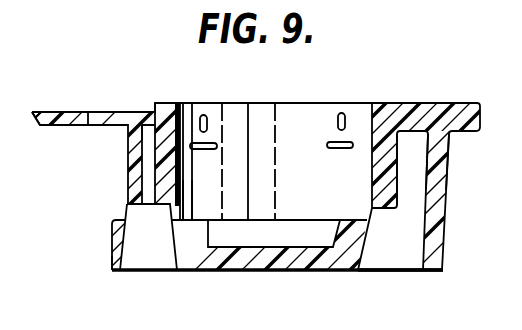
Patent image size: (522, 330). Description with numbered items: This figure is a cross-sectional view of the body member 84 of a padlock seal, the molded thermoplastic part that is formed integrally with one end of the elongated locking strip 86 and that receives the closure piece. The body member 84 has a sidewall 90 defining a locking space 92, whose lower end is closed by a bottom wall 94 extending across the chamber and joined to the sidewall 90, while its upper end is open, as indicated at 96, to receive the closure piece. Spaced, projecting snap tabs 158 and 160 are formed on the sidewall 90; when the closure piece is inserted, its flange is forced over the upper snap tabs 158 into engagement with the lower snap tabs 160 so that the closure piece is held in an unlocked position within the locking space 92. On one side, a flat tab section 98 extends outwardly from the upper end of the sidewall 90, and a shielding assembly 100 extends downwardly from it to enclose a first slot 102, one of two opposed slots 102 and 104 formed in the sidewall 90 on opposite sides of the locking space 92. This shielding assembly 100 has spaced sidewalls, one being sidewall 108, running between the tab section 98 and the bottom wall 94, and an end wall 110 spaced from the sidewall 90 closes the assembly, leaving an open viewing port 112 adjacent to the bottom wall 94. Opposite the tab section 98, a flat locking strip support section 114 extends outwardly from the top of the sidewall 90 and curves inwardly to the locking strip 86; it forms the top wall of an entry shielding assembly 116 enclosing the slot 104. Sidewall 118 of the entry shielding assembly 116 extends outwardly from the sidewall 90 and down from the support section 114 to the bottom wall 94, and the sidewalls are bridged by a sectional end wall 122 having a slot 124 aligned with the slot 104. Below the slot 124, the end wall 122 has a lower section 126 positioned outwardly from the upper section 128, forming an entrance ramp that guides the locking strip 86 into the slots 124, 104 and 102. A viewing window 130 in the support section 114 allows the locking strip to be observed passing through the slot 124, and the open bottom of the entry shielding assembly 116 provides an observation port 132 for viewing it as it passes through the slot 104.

The body member 84 is at (452, 254).
The locking strip 86 is at (38, 127).
The sidewall 90 is at (372, 110).
The locking space 92 is at (265, 113).
The bottom wall 94 is at (218, 258).
The open upper end 96 is at (190, 103).
The flat tab section 98 is at (412, 110).
The shielding assembly 100 is at (449, 178).
The first slot 102 is at (369, 216).
The slot 104 is at (192, 221).
The sidewall of shielding assembly 108 is at (406, 246).
The end wall 110 is at (443, 221).
The viewing port 112 is at (392, 258).
The flat locking strip support section 114 is at (77, 111).
The entry shielding assembly 116 is at (105, 262).
The sidewall of entry shielding assembly 118 is at (165, 236).
The sectional end wall 122 is at (122, 176).
The slot 124 is at (122, 207).
The lower section 126 is at (113, 233).
The upper section 128 is at (128, 135).
The viewing window 130 is at (105, 116).
The observation port 132 is at (139, 262).
The upper snap tabs 158 is at (204, 113).
The lower snap tabs 160 is at (199, 150).